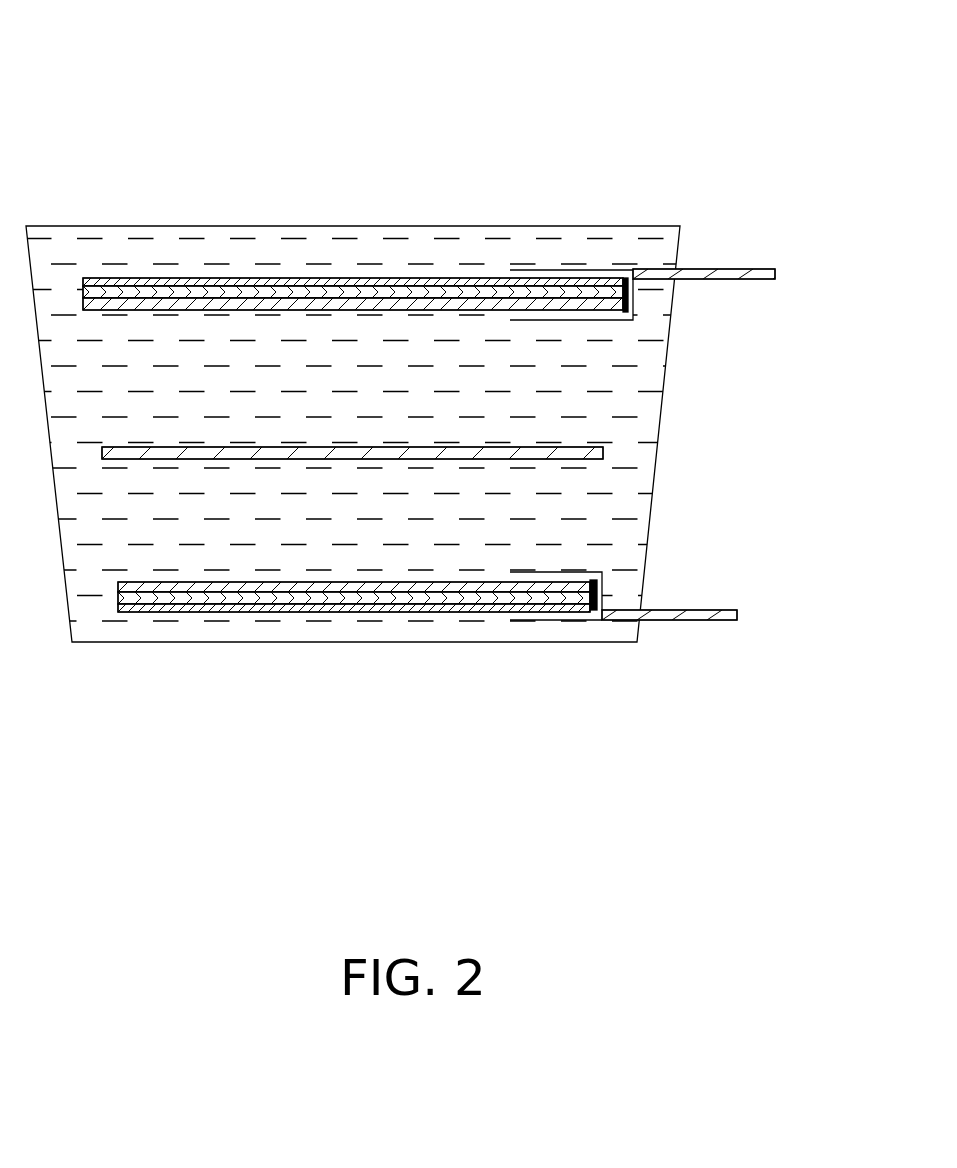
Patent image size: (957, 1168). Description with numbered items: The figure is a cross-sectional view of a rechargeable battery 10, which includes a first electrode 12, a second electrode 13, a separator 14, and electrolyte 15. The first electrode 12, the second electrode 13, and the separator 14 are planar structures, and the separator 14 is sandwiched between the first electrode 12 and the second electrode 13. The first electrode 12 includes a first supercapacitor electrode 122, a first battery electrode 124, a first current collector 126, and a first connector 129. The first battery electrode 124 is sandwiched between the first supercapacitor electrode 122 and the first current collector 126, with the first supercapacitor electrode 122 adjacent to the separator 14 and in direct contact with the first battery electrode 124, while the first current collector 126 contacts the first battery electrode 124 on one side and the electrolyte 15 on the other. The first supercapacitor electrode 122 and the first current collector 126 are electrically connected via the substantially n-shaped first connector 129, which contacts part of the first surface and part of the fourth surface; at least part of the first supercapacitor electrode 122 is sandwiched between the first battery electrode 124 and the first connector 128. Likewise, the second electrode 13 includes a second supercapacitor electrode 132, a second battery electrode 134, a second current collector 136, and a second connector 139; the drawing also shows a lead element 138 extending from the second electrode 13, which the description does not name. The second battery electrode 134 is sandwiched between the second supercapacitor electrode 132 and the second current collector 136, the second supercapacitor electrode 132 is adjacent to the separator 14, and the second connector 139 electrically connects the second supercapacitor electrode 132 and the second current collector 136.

The rechargeable battery 10 is at (328, 58).
The electrolyte 15 is at (500, 235).
The separator 14 is at (603, 452).
The first electrode 12 is at (485, 324).
The first supercapacitor electrode 122 is at (575, 308).
The first battery electrode 124 is at (612, 306).
The first current collector 126 is at (622, 292).
The first connector 128 is at (730, 275).
The first connector 129 is at (634, 284).
The second electrode 13 is at (492, 580).
The second supercapacitor electrode 132 is at (557, 578).
The second battery electrode 134 is at (602, 575).
The second current collector 136 is at (570, 606).
The second lead 138 is at (707, 614).
The second connector 139 is at (600, 598).